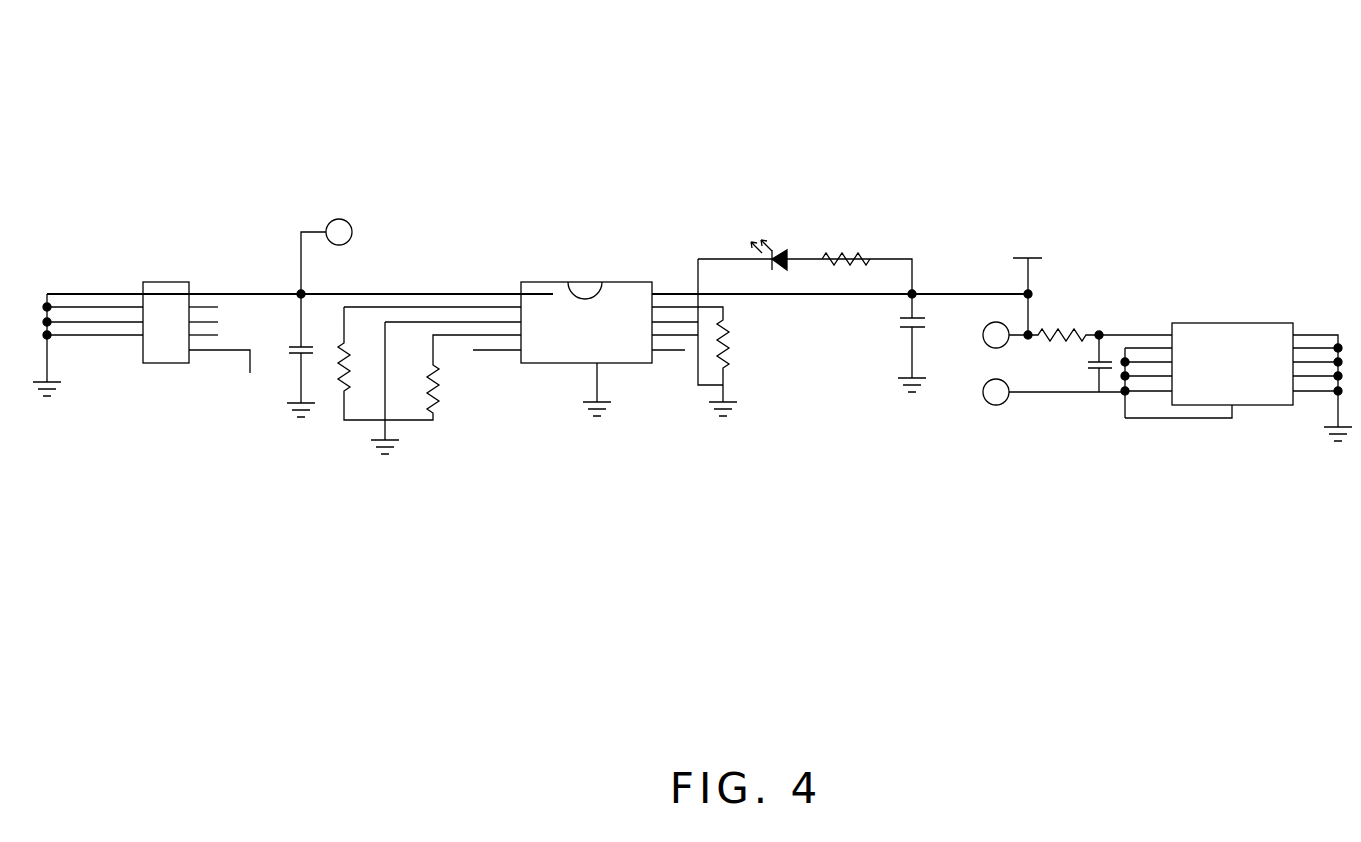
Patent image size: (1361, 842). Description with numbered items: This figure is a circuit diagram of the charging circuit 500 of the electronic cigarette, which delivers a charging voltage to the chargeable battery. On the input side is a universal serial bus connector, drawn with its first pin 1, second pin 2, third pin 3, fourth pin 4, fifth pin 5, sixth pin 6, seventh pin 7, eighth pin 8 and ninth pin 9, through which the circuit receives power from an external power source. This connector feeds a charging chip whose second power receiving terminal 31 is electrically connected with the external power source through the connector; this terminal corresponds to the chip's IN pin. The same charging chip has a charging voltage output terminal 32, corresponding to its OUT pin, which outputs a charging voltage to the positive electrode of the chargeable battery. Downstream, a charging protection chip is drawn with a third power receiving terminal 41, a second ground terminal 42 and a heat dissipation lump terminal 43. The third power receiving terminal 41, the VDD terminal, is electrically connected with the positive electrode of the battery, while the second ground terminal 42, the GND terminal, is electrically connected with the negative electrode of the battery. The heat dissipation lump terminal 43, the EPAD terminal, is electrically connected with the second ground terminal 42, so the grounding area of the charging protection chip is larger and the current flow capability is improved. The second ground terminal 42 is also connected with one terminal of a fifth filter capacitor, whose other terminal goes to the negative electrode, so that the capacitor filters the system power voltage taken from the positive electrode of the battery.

The charging circuit 500 is at (705, 77).
The first pin of USB connector J1 1 is at (193, 292).
The second pin of USB connector J1 2 is at (218, 307).
The third pin of USB connector J1 3 is at (218, 322).
The fourth pin of USB connector J1 4 is at (218, 335).
The fifth pin of USB connector J1 5 is at (200, 350).
The sixth pin of USB connector J1 6 is at (128, 294).
The seventh pin of USB connector J1 7 is at (115, 307).
The eighth pin of USB connector J1 8 is at (93, 322).
The ninth pin of USB connector J1 9 is at (72, 335).
The second power receiving terminal 31 is at (514, 291).
The charging voltage output terminal 32 is at (658, 291).
The third power receiving terminal 41 is at (1163, 335).
The second ground terminal 42 is at (1137, 348).
The heat dissipation lump terminal 43 is at (1222, 420).